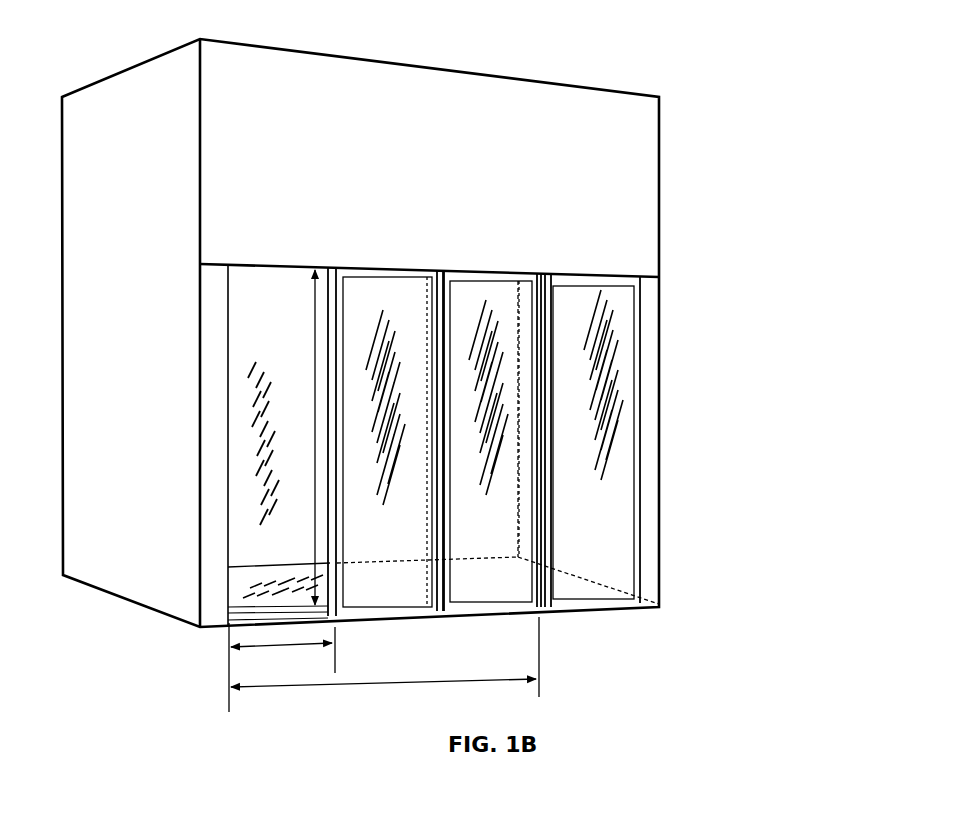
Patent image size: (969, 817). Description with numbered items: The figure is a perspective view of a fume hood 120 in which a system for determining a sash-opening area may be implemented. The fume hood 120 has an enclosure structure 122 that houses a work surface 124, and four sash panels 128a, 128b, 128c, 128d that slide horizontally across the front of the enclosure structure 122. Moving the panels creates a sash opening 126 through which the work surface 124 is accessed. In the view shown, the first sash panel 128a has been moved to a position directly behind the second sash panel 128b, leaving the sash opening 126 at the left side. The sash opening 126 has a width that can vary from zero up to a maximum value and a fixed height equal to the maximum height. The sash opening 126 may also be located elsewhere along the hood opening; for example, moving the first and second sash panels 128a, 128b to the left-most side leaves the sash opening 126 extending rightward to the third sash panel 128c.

The fume hood 120 is at (418, 361).
The enclosure structure 122 is at (662, 110).
The work surface 124 is at (243, 605).
The sash opening 126 is at (243, 495).
The first sash panel 128a is at (332, 268).
The second sash panel 128b is at (342, 315).
The third sash panel 128c is at (483, 278).
The fourth sash panel 128d is at (547, 300).